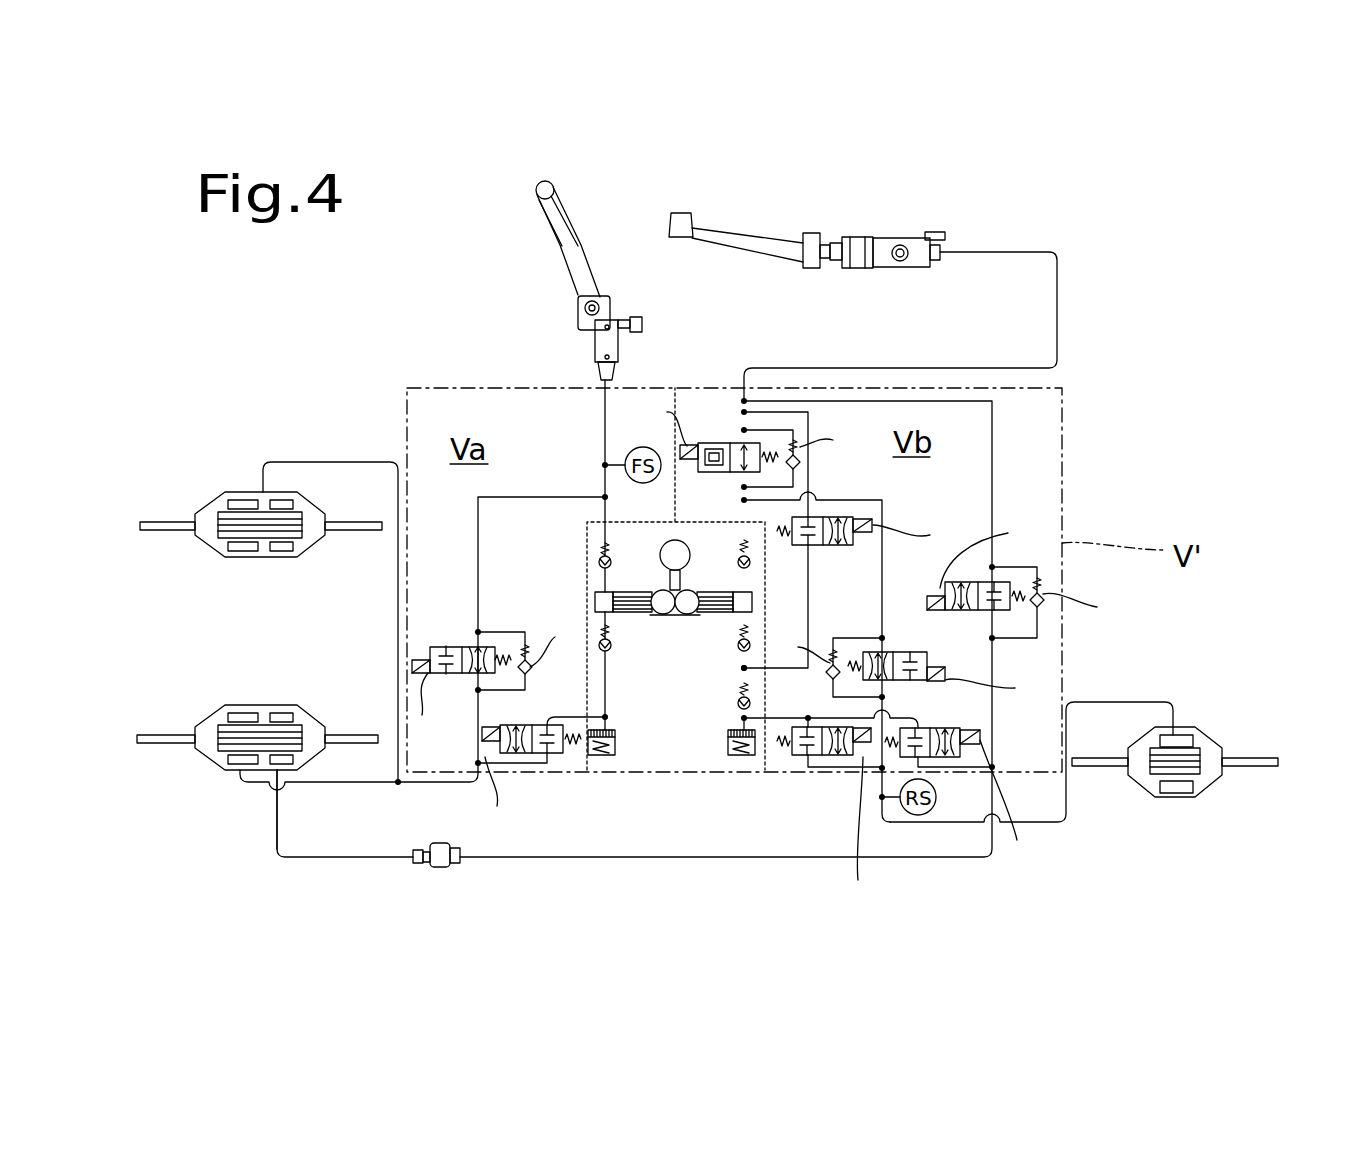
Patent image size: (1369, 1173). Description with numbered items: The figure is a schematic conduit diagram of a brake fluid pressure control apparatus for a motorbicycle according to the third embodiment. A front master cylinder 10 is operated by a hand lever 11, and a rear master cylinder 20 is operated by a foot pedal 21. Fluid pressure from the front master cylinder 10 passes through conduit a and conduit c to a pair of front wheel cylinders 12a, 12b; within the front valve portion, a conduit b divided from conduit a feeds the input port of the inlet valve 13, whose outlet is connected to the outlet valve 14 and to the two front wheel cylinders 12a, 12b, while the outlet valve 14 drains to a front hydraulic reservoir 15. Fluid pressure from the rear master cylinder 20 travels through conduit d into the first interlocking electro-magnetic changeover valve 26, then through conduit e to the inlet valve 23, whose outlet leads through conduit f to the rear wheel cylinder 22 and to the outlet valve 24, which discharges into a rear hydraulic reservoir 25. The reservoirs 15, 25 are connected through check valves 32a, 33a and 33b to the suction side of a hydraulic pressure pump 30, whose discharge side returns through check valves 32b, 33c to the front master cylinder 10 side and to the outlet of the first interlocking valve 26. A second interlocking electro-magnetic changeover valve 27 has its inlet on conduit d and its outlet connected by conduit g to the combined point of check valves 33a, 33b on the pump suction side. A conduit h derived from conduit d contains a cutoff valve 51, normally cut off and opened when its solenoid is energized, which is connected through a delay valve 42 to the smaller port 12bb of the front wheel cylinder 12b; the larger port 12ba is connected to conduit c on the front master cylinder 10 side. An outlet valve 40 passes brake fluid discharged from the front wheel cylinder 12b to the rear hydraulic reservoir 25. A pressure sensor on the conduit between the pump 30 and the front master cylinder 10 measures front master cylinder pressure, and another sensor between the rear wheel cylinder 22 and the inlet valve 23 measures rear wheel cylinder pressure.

The front master cylinder 10 is at (602, 219).
The hand lever 11 is at (567, 241).
The rear master cylinder 20 is at (805, 218).
The foot pedal 21 is at (677, 243).
The front wheel cylinder 12a is at (243, 490).
The front wheel cylinder 12b is at (223, 768).
The larger port 12ba is at (230, 760).
The smaller port 12bb is at (287, 762).
The inlet valve 13 is at (440, 646).
The outlet valve 14 is at (520, 724).
The front hydraulic reservoir 15 is at (603, 757).
The rear wheel cylinder 22 is at (1187, 727).
The inlet valve 23 is at (910, 652).
The outlet valve 24 is at (830, 757).
The rear hydraulic reservoir 25 is at (737, 757).
The first interlocking electro-magnetic changeover valve 26 is at (722, 442).
The second interlocking electro-magnetic changeover valve 27 is at (833, 517).
The hydraulic pressure pump 30 is at (646, 565).
The check valve 32a is at (610, 648).
The check valve 32b is at (598, 560).
The check valve 33a is at (737, 703).
The check valve 33b is at (749, 643).
The check valve 33c is at (738, 556).
The outlet valve 40 is at (947, 728).
The delay valve 42 is at (438, 867).
The cutoff valve 51 is at (1003, 583).
The conduit a is at (605, 412).
The conduit b is at (557, 498).
The conduit c is at (430, 784).
The conduit d is at (863, 368).
The conduit e is at (882, 603).
The conduit f is at (957, 823).
The conduit g is at (810, 565).
The conduit h is at (993, 442).